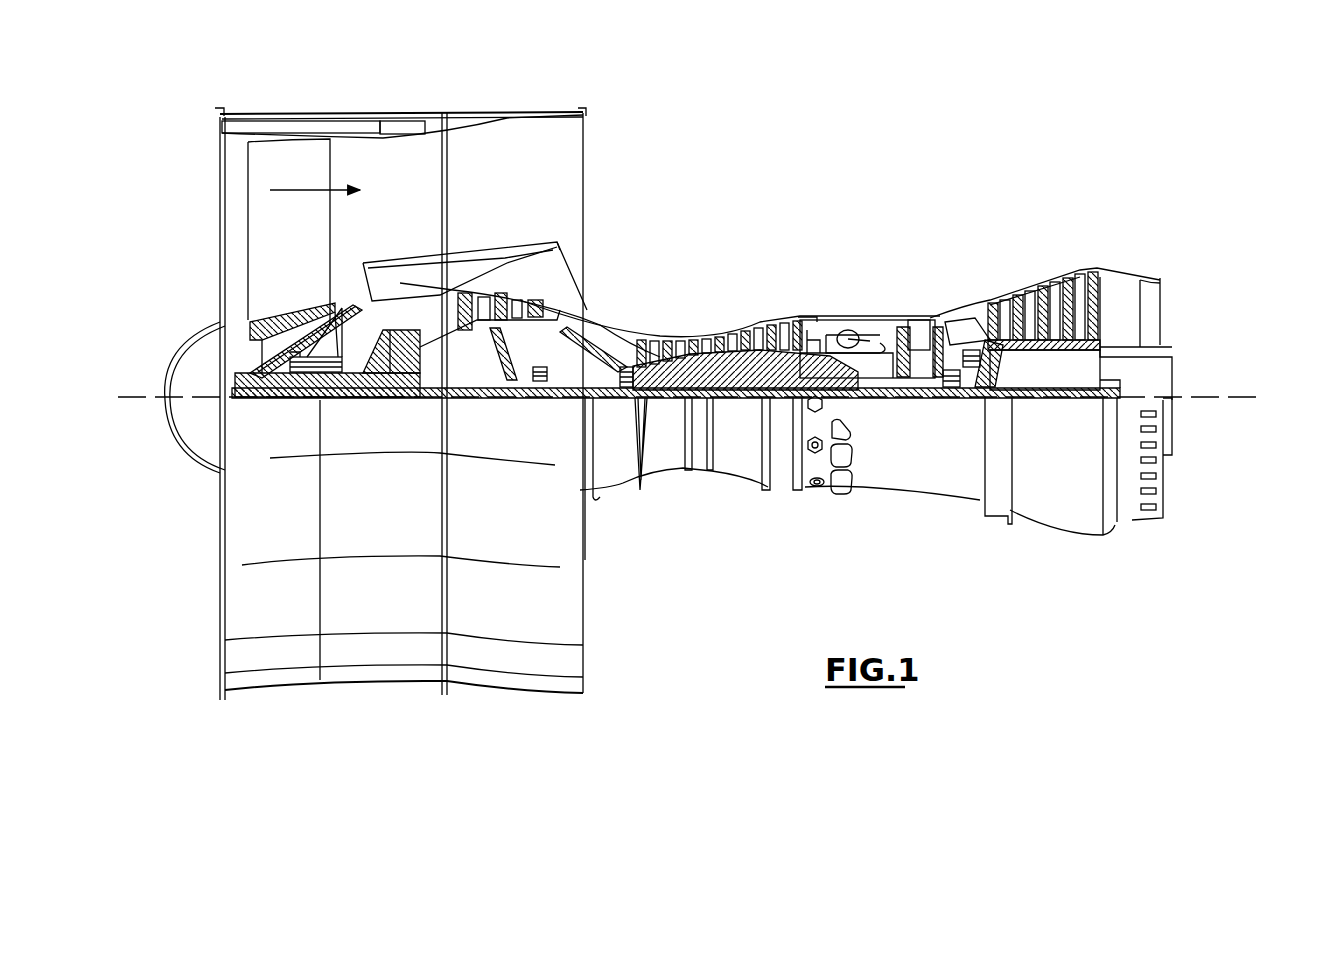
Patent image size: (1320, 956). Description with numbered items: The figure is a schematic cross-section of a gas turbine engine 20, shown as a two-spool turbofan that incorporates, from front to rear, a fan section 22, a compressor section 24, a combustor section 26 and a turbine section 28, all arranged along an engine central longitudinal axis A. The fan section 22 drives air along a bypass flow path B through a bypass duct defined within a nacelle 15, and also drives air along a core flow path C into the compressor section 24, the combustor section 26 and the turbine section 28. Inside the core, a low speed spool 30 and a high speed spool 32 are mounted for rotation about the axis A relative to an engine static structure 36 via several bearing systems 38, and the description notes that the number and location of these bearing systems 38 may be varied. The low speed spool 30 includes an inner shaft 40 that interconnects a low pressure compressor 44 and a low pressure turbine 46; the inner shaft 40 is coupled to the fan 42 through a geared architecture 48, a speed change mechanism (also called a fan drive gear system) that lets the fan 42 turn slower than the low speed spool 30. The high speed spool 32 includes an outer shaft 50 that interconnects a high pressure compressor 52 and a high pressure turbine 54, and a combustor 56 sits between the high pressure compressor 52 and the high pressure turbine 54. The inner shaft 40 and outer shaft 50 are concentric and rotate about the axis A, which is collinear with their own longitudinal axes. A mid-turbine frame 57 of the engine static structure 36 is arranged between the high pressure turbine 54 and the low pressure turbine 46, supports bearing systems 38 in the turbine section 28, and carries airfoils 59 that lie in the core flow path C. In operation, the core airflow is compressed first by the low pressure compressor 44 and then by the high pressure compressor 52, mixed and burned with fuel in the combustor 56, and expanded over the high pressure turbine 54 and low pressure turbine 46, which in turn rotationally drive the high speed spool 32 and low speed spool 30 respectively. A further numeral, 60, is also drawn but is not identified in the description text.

The gas turbine engine 20 is at (862, 165).
The fan section 22 is at (333, 104).
The nacelle 15 is at (403, 121).
The fan 42 is at (303, 246).
The bypass flow path B is at (303, 188).
The core flow path C is at (400, 299).
The geared architecture 48 is at (410, 380).
The low pressure compressor 44 is at (505, 305).
The bearing systems 38 is at (538, 385).
The low speed spool 30 is at (740, 403).
The inner shaft 40 is at (603, 400).
The engine static structure 36 is at (780, 491).
The outer shaft 50 is at (867, 400).
The compressor section 24 is at (633, 303).
The high pressure compressor 52 is at (715, 370).
The combustor section 26 is at (855, 290).
The high speed spool 32 is at (786, 325).
The combustor 56 is at (848, 340).
The mid-turbine frame 60 is at (921, 328).
The high pressure turbine 54 is at (917, 330).
The mid-turbine frame 57 is at (965, 303).
The airfoils 59 is at (985, 355).
The turbine section 28 is at (1003, 257).
The low pressure turbine 46 is at (1052, 278).
The engine central longitudinal axis A is at (1256, 398).